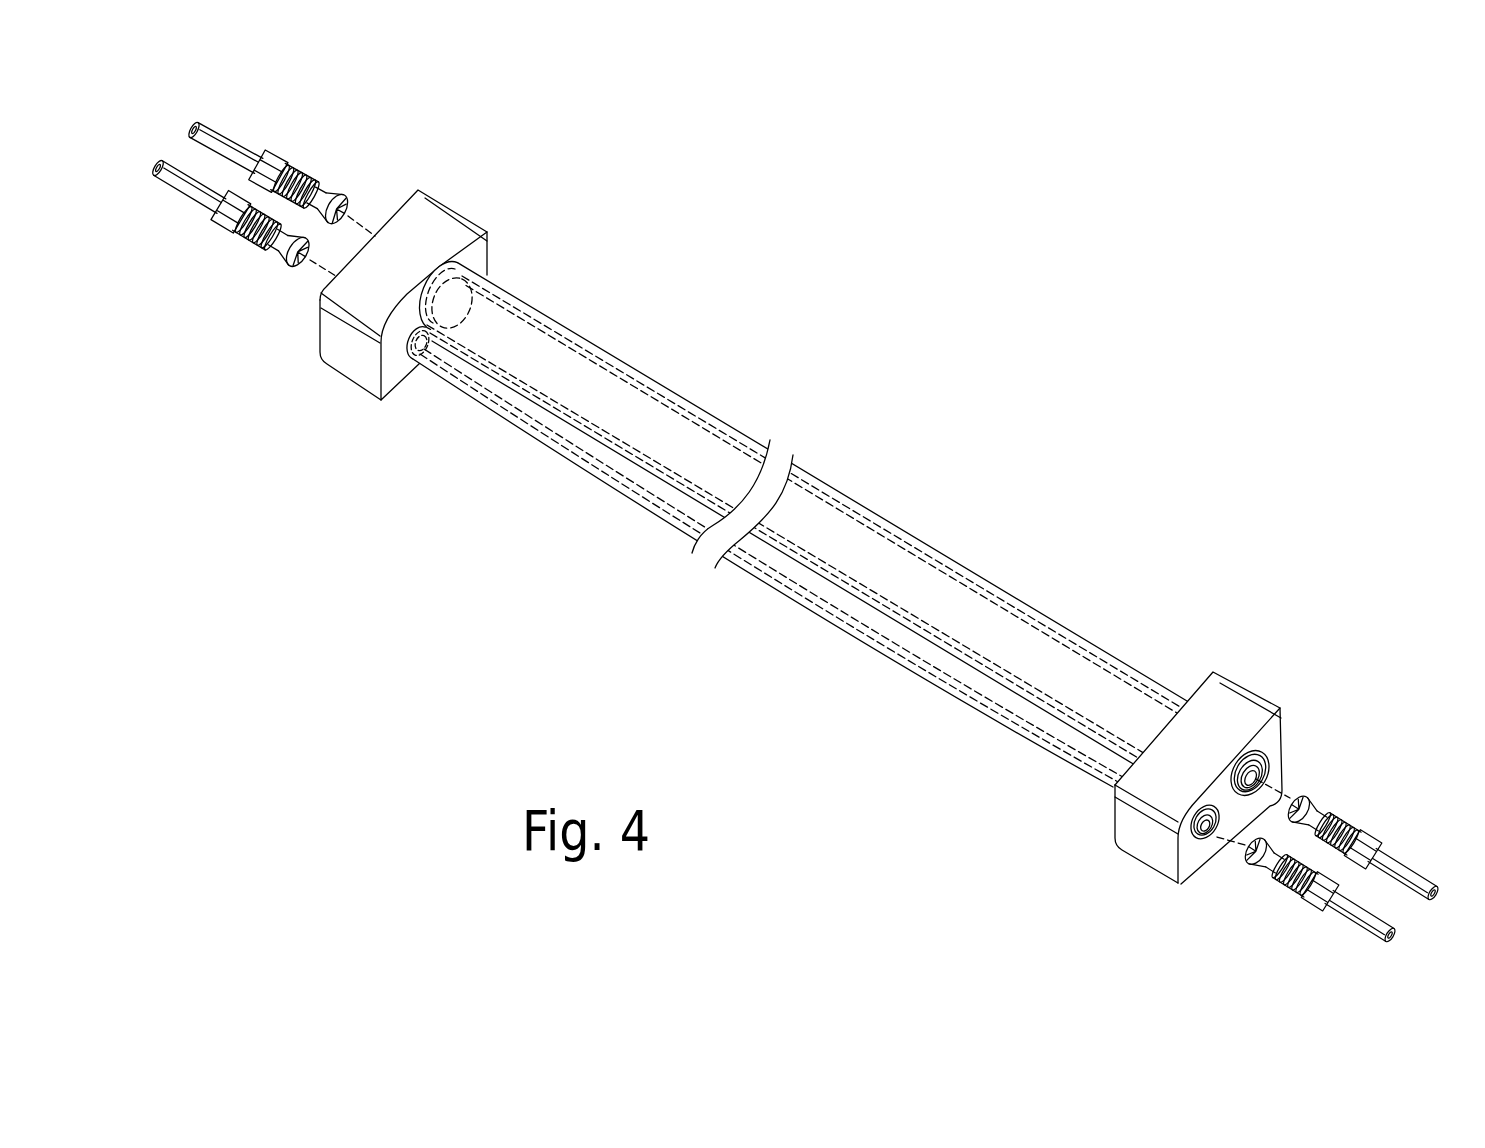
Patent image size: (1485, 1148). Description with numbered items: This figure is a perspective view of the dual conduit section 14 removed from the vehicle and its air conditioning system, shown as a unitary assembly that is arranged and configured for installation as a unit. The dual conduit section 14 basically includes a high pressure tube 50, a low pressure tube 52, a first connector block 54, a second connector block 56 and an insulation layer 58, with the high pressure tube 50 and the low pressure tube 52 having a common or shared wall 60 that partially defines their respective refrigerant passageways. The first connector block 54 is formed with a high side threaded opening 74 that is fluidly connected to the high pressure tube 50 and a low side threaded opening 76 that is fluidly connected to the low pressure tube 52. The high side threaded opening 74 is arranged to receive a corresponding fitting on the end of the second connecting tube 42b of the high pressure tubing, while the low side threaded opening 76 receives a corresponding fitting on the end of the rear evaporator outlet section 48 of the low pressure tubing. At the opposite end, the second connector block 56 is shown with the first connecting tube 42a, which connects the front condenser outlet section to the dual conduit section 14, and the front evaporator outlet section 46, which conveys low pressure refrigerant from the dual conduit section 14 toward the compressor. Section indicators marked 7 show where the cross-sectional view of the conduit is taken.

The dual conduit section 14 is at (835, 528).
The first connecting tube 42a is at (183, 188).
The second connecting tube 42b is at (1358, 920).
The front evaporator outlet section 46 is at (220, 133).
The rear evaporator outlet section 48 is at (1416, 866).
The high pressure tube 50 is at (764, 589).
The low pressure tube 52 is at (809, 513).
The first connector block 54 is at (1209, 743).
The second connector block 56 is at (433, 218).
The insulation layer 58 is at (762, 583).
The shared wall 60 is at (993, 667).
The high side threaded opening 74 is at (1192, 818).
The low side threaded opening 76 is at (1265, 781).
The section line 7- 7 is at (963, 533).